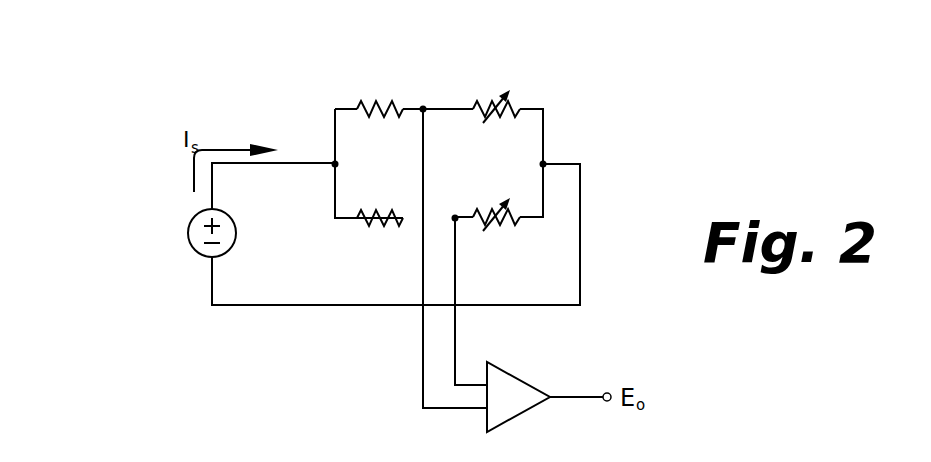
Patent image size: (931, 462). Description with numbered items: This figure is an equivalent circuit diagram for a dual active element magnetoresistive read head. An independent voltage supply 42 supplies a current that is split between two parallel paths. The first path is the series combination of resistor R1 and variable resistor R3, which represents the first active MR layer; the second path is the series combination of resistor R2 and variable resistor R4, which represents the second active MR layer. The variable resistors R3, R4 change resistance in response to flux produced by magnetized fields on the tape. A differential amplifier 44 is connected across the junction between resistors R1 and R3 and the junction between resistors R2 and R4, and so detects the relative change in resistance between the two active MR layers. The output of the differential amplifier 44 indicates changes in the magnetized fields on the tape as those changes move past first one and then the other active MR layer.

The independent voltage supply 42 is at (188, 230).
The differential amplifier 44 is at (513, 420).
The resistor R1 is at (380, 126).
The resistor R2 is at (380, 234).
The variable resistor R3 is at (497, 120).
The variable resistor R4 is at (497, 227).